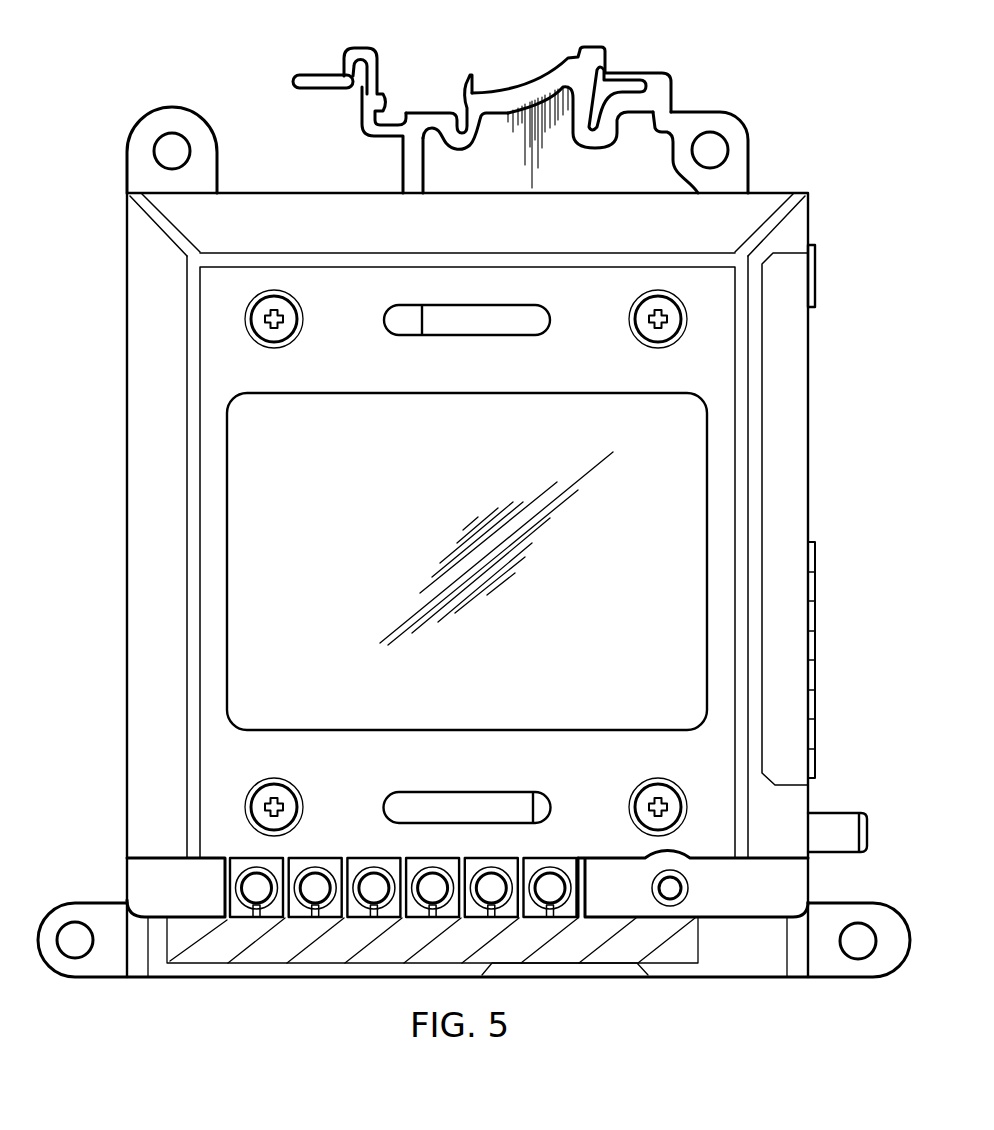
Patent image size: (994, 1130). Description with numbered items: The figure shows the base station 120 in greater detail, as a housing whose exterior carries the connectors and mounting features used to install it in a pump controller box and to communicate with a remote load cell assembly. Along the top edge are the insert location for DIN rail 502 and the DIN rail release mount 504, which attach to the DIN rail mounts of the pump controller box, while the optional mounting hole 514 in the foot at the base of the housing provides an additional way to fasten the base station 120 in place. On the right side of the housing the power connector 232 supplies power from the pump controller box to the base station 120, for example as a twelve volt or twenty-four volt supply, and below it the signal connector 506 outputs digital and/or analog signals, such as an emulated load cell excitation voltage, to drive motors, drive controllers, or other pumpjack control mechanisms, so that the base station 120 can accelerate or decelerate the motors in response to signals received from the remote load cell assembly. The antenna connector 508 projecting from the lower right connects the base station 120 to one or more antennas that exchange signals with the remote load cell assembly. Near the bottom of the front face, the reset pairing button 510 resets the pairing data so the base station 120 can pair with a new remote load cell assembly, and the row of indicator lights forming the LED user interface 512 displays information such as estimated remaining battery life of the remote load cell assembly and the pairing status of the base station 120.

The base station 120 is at (115, 560).
The power connector 232 is at (816, 278).
The insert location for DIN rail 502 is at (620, 76).
The DIN rail release mount 504 is at (318, 75).
The signal connector 506 is at (817, 672).
The antenna connector 508 is at (868, 833).
The reset pairing button 510 is at (668, 892).
The LED user interface 512 is at (374, 886).
The optional mounting hole 514 is at (75, 927).